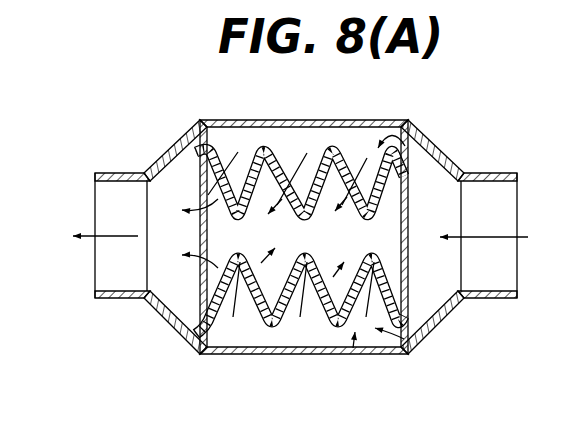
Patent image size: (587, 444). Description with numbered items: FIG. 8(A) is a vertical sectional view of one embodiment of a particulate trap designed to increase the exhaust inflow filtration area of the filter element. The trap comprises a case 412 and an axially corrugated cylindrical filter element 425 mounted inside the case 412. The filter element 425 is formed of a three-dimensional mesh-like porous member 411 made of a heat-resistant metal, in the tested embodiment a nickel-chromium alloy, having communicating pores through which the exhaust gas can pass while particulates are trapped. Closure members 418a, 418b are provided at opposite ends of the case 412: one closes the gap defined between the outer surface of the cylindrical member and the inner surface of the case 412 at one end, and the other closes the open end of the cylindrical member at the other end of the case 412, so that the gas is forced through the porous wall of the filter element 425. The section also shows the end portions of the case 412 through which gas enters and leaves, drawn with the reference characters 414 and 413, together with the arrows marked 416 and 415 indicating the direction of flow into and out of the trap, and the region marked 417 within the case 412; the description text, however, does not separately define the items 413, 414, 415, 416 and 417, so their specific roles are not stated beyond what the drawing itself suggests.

The three-dimensional mesh-like porous member 411 is at (324, 310).
The case 412 is at (309, 248).
The outlet pipe 413 is at (489, 280).
The inlet pipe 414 is at (117, 277).
The exhaust gas outflow direction 415 is at (505, 238).
The exhaust gas inflow direction 416 is at (82, 238).
The gas flow path 417 is at (359, 342).
The closure member 418a is at (204, 328).
The closure member 418b is at (408, 270).
The axially corrugated cylindrical filter element 425 is at (411, 195).